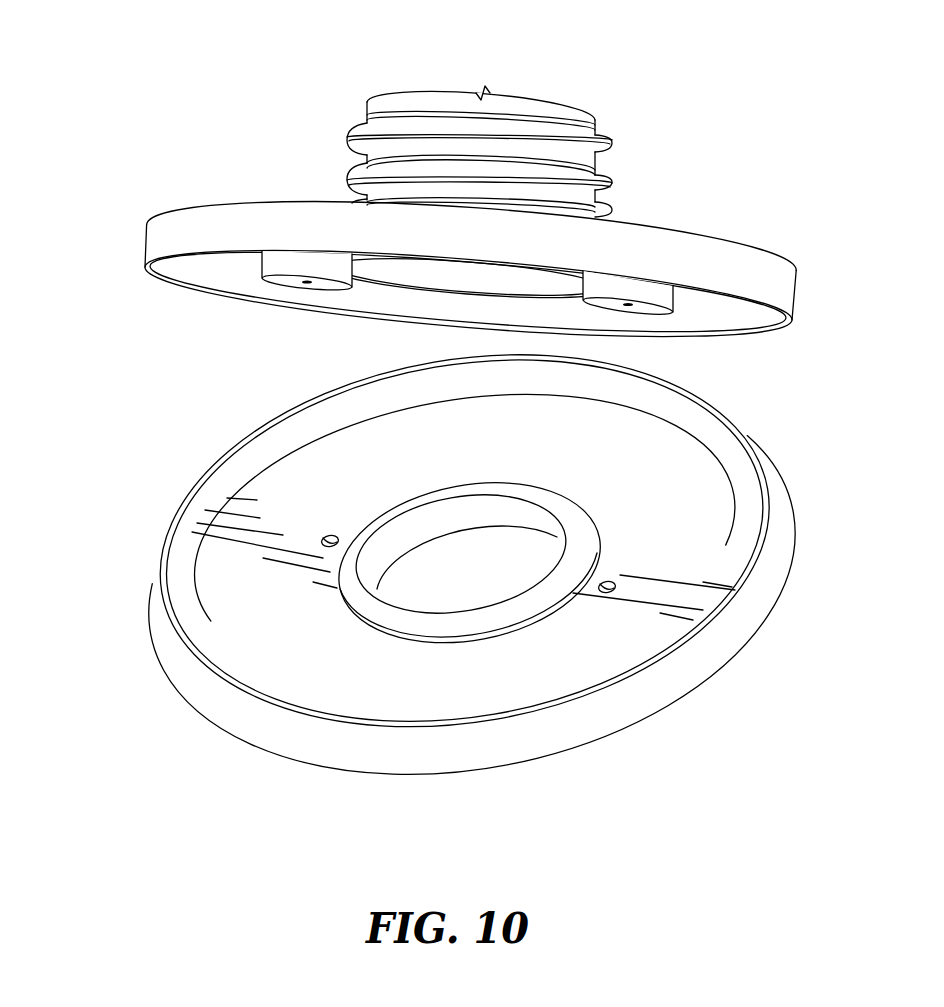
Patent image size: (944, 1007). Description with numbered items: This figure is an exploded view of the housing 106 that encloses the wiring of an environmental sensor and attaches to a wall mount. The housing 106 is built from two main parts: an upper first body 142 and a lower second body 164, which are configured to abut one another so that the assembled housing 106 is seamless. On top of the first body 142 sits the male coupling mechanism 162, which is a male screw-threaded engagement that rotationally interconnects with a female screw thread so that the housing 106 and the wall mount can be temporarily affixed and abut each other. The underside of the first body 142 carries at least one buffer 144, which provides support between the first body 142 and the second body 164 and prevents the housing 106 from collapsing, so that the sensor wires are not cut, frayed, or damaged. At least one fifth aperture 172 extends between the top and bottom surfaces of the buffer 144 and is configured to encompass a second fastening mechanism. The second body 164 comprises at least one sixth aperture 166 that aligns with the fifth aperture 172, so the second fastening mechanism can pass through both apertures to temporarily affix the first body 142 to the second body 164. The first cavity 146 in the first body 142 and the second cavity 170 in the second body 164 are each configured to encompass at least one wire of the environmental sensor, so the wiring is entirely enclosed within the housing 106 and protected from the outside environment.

The housing 106 is at (146, 49).
The first body 142 is at (742, 258).
The buffer 144 is at (660, 308).
The first cavity 146 is at (250, 258).
The male coupling mechanism 162 is at (373, 139).
The second body 164 is at (672, 678).
The sixth aperture 166 is at (323, 540).
The second cavity 170 is at (190, 600).
The fifth aperture 172 is at (627, 308).